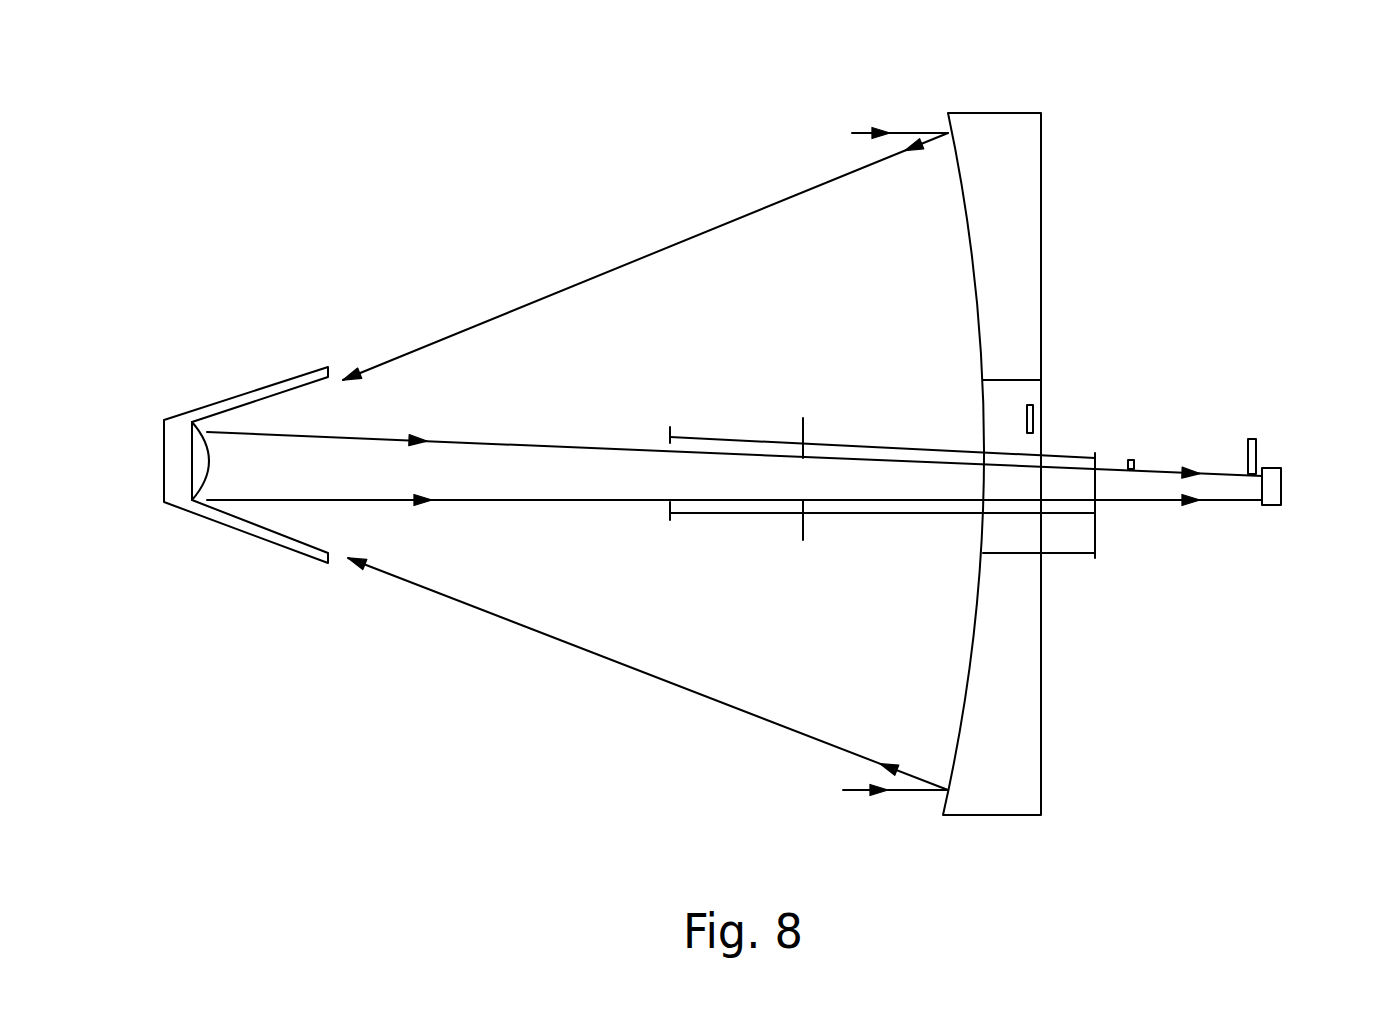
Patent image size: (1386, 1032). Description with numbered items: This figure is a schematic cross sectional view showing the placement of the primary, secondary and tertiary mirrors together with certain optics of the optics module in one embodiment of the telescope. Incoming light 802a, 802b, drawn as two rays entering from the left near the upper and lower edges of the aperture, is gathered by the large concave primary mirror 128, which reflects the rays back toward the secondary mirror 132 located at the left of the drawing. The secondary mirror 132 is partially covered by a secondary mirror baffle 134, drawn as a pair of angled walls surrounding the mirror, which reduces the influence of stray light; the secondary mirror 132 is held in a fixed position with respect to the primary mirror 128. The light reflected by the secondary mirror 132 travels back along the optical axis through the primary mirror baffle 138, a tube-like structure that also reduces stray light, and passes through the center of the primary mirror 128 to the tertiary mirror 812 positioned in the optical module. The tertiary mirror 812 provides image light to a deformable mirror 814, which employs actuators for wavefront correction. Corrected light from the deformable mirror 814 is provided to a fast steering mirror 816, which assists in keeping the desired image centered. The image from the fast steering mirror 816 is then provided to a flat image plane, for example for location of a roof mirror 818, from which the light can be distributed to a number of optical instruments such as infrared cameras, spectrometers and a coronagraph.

The primary mirror 128 is at (967, 212).
The secondary mirror 132 is at (209, 462).
The secondary mirror baffle 134 is at (240, 400).
The primary mirror baffle 138 is at (708, 513).
The light 802a is at (902, 133).
The light 802b is at (897, 790).
The tertiary mirror 812 is at (1281, 487).
The deformable mirror 814 is at (1131, 460).
The fast steering mirror 816 is at (1256, 457).
The roof mirror 818 is at (1035, 418).